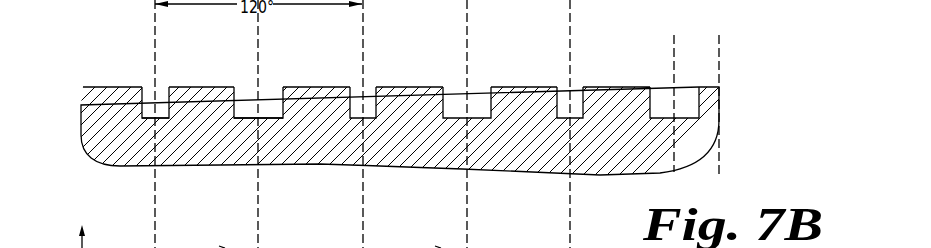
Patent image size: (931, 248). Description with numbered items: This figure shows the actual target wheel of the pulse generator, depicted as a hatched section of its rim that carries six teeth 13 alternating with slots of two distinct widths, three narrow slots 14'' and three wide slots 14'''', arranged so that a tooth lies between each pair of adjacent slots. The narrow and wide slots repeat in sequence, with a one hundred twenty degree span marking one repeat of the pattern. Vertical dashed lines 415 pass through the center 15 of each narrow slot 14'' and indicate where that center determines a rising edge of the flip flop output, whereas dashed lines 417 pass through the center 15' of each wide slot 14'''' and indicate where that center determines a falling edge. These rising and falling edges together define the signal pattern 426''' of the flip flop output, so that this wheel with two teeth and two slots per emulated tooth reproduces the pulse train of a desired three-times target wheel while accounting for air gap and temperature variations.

The teeth 13 is at (200, 87).
The narrow slots 14'' is at (354, 60).
The wide slots 14'''' is at (514, 62).
The center of the narrow slots 15 is at (169, 72).
The center of the wide slots 15' is at (256, 87).
The lines 415 is at (155, 198).
The lines 417 is at (260, 193).
The signal pattern 426''' is at (321, 229).